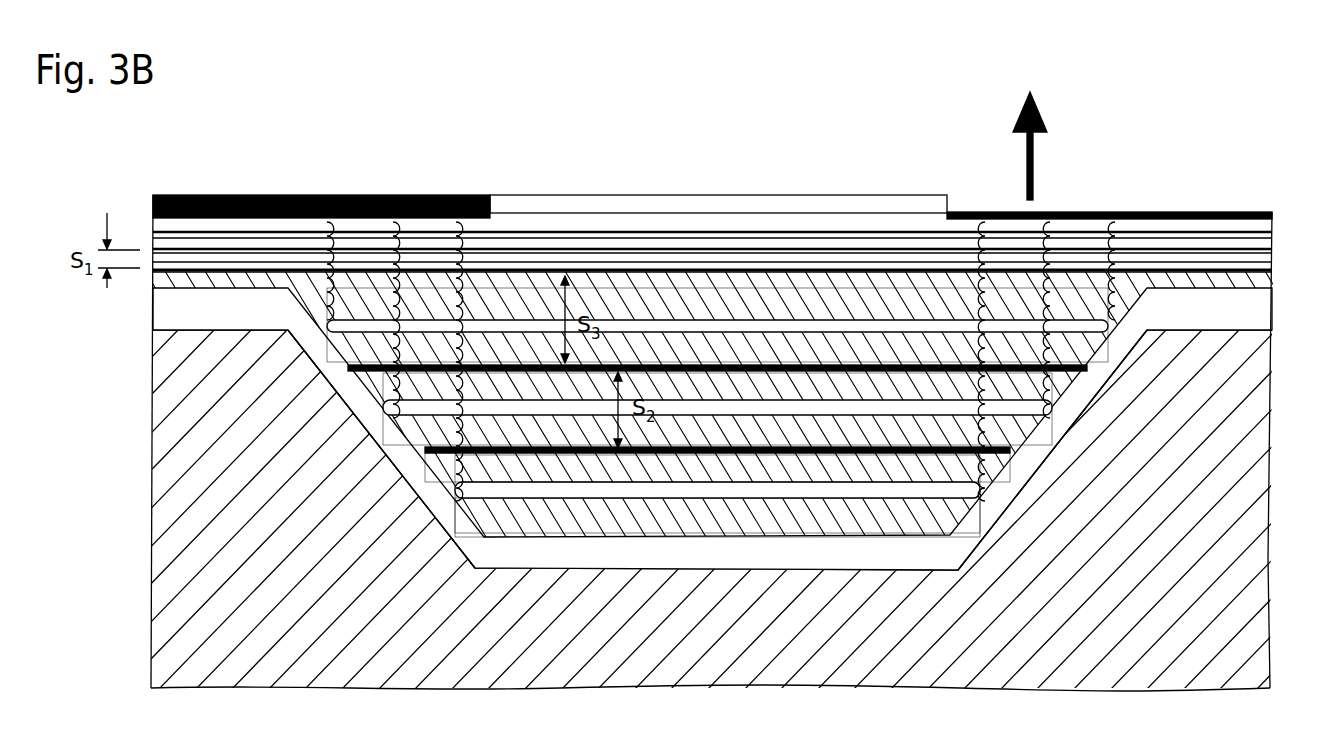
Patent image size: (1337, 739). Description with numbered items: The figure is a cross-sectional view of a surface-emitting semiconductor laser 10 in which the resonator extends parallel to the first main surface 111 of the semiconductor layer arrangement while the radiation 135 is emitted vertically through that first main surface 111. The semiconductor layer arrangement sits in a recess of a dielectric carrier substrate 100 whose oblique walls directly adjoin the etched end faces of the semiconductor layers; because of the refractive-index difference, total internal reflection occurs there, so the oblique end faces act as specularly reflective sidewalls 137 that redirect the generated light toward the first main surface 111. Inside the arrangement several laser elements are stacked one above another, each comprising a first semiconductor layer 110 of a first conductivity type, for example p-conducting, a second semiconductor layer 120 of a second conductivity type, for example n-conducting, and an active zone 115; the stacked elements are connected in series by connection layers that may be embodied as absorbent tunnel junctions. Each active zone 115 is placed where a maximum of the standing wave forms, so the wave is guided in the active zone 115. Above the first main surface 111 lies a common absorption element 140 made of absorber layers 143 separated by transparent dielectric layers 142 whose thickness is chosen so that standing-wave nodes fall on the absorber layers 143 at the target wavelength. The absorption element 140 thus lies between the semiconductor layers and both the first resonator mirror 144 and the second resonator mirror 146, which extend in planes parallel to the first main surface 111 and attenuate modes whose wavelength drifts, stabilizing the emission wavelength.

The semiconductor laser 10 is at (252, 118).
The dielectric carrier substrate 100 is at (1268, 630).
The first semiconductor layer 110 is at (693, 527).
The first main surface 111 is at (895, 292).
The active zone 115 is at (1085, 328).
The second semiconductor layer 120 is at (748, 460).
The radiation 135 is at (1035, 155).
The specularly reflective sidewall 137 is at (393, 440).
The absorption element 140 is at (1283, 215).
The transparent dielectric layer 142 is at (1245, 225).
The absorber layer 143 is at (236, 240).
The first resonator mirror 144 is at (375, 195).
The second resonator mirror 146 is at (1185, 212).